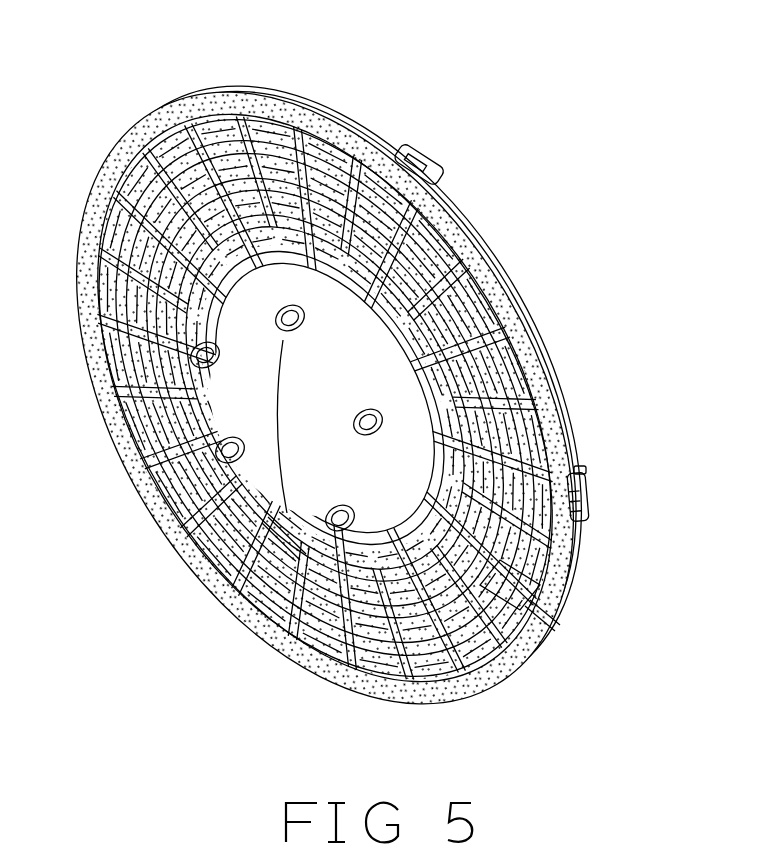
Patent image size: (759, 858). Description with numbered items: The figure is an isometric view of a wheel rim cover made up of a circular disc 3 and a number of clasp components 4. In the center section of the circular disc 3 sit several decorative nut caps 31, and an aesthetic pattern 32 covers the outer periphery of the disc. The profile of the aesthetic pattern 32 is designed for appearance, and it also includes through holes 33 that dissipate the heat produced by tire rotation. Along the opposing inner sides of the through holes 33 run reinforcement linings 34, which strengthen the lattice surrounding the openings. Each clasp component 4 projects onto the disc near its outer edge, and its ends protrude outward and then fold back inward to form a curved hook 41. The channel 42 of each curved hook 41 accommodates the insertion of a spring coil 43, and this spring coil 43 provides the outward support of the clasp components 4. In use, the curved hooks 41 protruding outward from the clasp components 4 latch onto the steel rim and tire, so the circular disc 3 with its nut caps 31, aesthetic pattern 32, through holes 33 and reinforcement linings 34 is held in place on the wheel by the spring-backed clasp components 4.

The circular disc 3 is at (338, 398).
The decorative nut caps 31 is at (200, 355).
The aesthetic pattern 32 is at (262, 523).
The through holes 33 is at (523, 587).
The reinforcement linings 34 is at (543, 618).
The clasp components 4 is at (536, 322).
The curved hook 41 is at (588, 494).
The channel 42 is at (583, 470).
The spring coil 43 is at (533, 315).